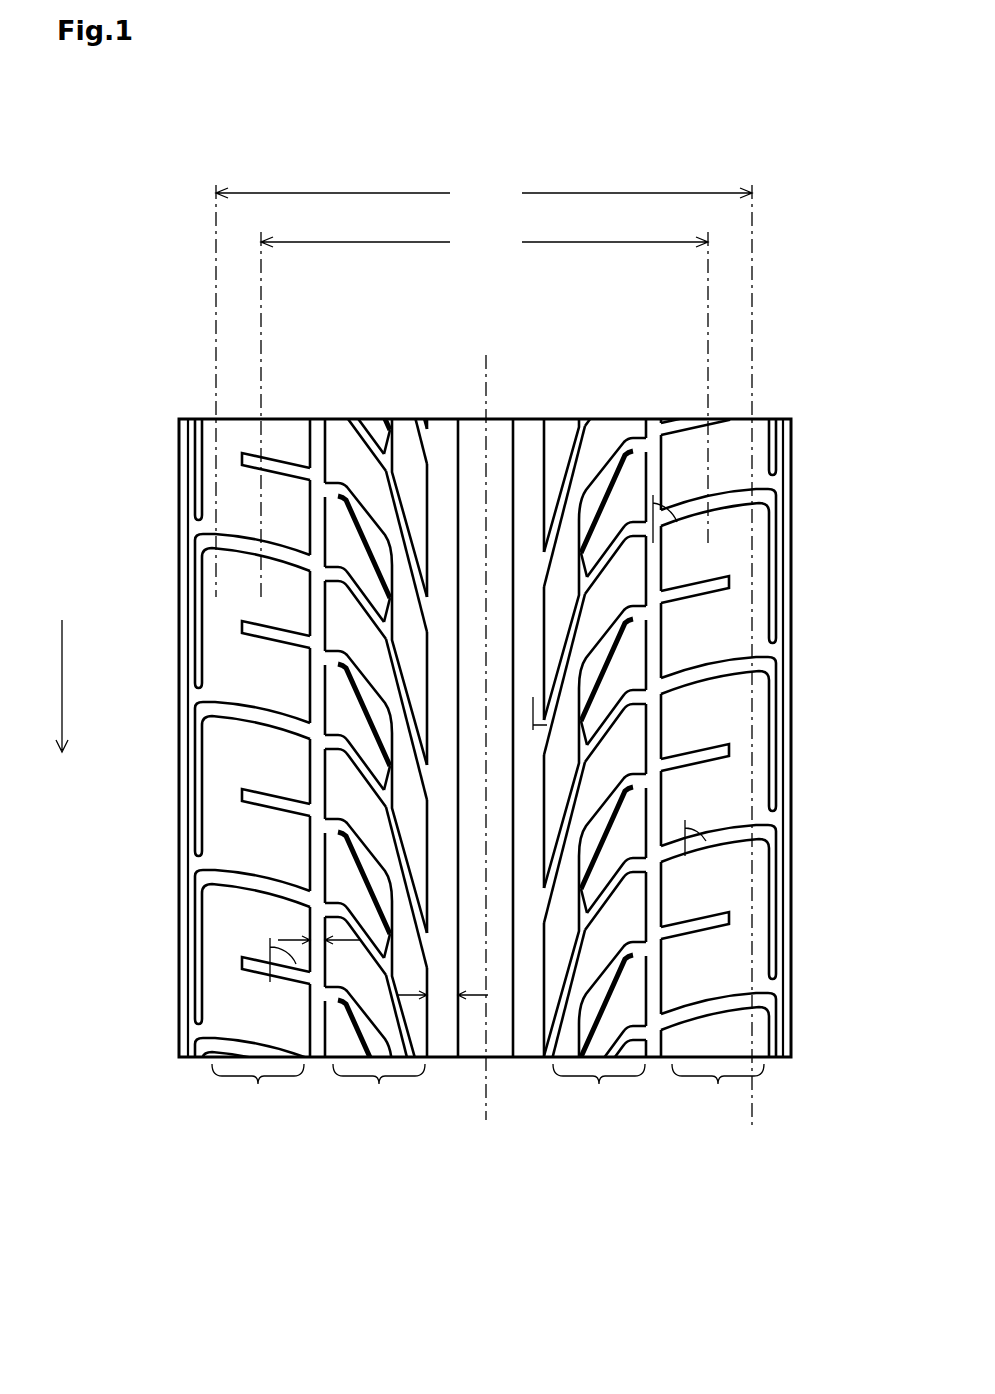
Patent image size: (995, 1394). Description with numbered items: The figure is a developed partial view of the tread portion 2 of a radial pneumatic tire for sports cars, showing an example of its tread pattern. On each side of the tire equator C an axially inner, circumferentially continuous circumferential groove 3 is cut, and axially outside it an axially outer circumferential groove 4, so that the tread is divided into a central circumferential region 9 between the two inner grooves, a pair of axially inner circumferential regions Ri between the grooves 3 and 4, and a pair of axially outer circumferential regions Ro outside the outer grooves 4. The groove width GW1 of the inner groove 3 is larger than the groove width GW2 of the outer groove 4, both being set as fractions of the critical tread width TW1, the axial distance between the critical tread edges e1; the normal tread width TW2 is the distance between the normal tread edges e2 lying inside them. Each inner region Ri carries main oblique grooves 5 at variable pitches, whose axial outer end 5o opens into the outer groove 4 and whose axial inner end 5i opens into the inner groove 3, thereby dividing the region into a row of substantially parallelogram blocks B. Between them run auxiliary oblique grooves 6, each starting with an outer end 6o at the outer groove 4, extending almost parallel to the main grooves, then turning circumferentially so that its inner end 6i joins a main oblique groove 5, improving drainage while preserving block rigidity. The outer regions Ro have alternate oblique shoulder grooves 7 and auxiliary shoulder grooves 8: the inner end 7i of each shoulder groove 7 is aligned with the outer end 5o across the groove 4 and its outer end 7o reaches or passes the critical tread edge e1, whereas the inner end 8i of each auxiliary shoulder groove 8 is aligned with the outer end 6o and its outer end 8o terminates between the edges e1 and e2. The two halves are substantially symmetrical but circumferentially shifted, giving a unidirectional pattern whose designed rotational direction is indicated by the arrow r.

The tread portion 2 is at (594, 387).
The axially inner circumferential groove 3 is at (443, 418).
The axially outer circumferential groove 4 is at (295, 418).
The main oblique groove 5 is at (372, 418).
The auxiliary oblique groove 6 is at (345, 546).
The oblique shoulder groove 7 is at (241, 534).
The auxiliary shoulder groove 8 is at (277, 446).
The central circumferential region 9 is at (503, 1040).
The block B is at (352, 596).
The tire equator C is at (486, 721).
The critical tread width TW1 is at (484, 193).
The normal tread width TW2 is at (484, 242).
The groove width of axially inner circumferential groove GW1 is at (443, 997).
The groove width of axially outer circumferential groove GW2 is at (313, 947).
The axially outer circumferential region Ro is at (488, 1096).
The axially inner circumferential region Ri is at (489, 1096).
The critical tread edge e1 is at (215, 337).
The normal tread edge e2 is at (261, 278).
The rotational direction arrow r is at (62, 702).
The axial outer end of main oblique groove 5o is at (316, 745).
The axial inner end of main oblique groove 5i is at (442, 943).
The axial outer end of auxiliary oblique groove 6o is at (332, 654).
The axial inner end of auxiliary oblique groove 6i is at (383, 826).
The axial outer end of oblique shoulder groove 7o is at (745, 997).
The axial inner end of oblique shoulder groove 7i is at (656, 1028).
The axial outer end of auxiliary shoulder groove 8o is at (707, 752).
The axial inner end of auxiliary shoulder groove 8i is at (665, 705).